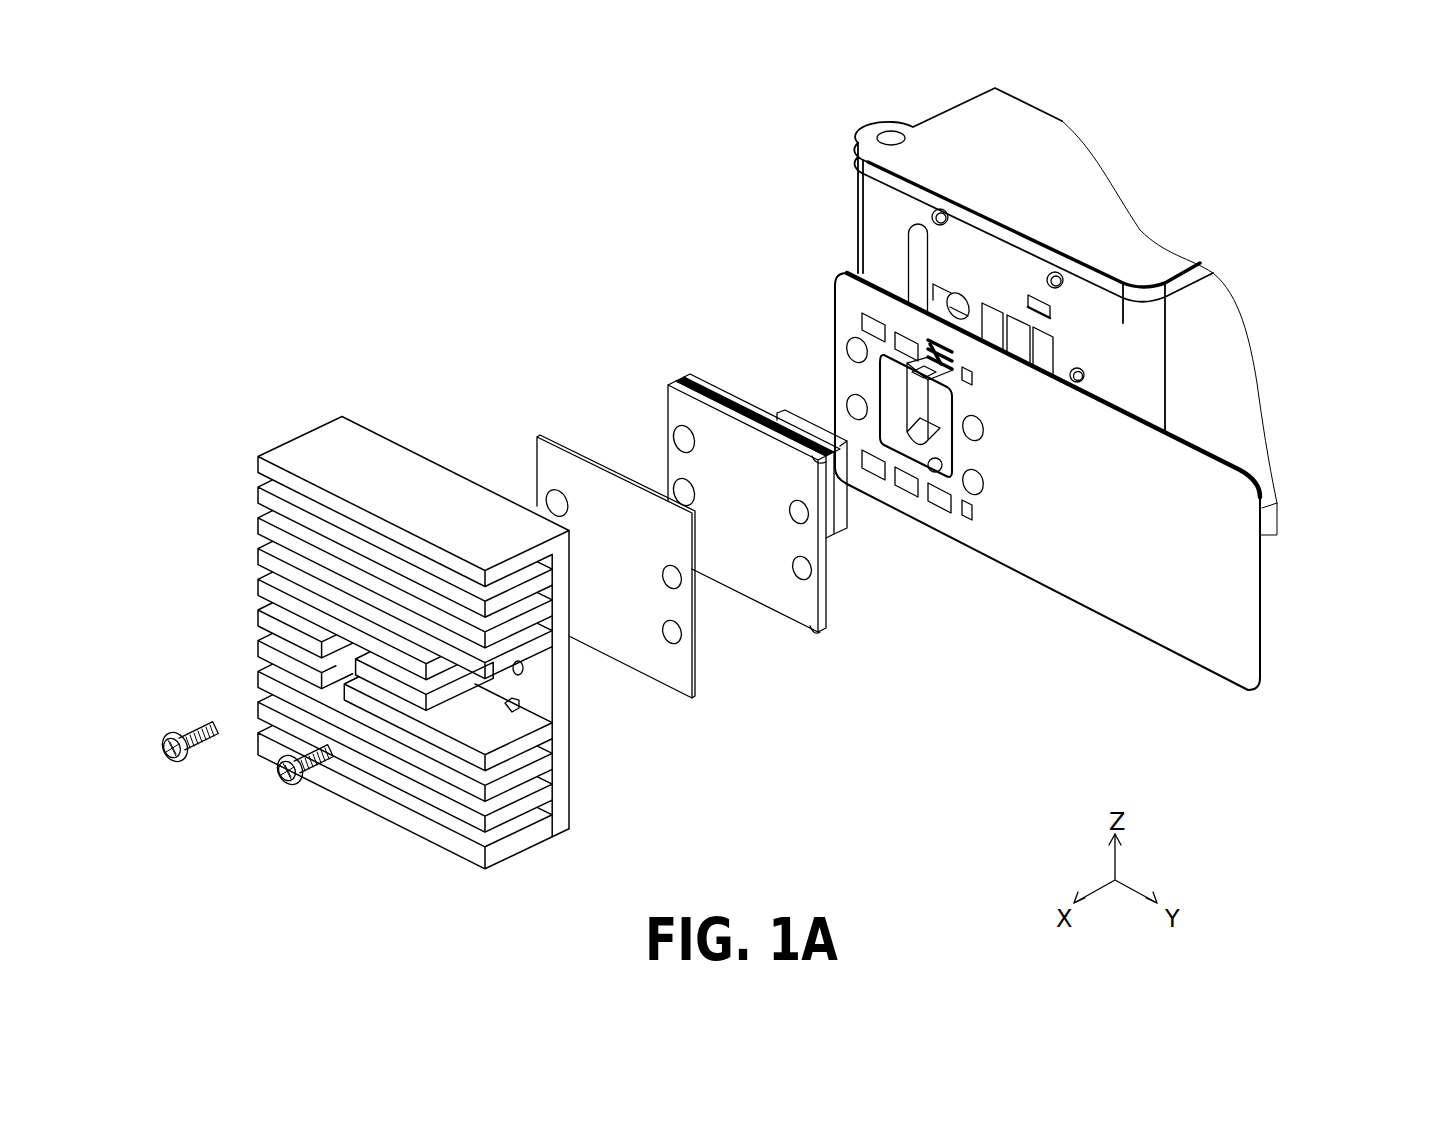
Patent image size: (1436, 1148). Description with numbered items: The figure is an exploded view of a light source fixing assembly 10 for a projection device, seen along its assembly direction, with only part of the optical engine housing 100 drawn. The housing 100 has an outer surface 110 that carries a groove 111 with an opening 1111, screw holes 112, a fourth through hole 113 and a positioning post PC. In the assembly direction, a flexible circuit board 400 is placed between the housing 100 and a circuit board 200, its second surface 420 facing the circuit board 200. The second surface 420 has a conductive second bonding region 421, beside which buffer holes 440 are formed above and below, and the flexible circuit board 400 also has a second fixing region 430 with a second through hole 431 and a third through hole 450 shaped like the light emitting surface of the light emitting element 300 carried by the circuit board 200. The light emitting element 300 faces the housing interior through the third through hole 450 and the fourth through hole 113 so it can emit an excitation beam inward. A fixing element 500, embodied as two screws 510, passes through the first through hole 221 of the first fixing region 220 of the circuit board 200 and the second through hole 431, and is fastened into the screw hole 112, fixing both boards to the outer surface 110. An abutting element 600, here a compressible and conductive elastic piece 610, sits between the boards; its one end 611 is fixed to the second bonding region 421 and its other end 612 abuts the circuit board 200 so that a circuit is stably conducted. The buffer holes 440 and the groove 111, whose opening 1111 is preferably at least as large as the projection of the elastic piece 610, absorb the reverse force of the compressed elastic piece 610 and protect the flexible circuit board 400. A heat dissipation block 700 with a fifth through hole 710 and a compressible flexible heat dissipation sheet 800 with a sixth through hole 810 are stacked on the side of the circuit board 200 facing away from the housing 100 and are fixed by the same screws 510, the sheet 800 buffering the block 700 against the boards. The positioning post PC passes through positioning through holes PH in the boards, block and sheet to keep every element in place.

The light source fixing assembly 10 is at (218, 253).
The optical engine housing 100 is at (975, 125).
The outer surface 110 is at (932, 251).
The groove 111 is at (1066, 226).
The opening of the groove 1111 is at (950, 337).
The screw hole 112 is at (1092, 372).
The fourth through hole 113 is at (1052, 347).
The positioning post PC is at (950, 297).
The circuit board 200 is at (700, 382).
The first fixing region 220 is at (863, 577).
The first through hole 221 is at (806, 520).
The light emitting element 300 is at (788, 410).
The flexible circuit board 400 is at (838, 278).
The second surface 420 is at (1024, 536).
The second bonding region 421 is at (858, 318).
The second fixing region 430 is at (967, 529).
The second through hole 431 is at (971, 438).
The buffer hole 440 is at (1039, 312).
The third through hole 450 is at (896, 446).
The fixing element 500 is at (277, 799).
The screw 510 is at (312, 785).
The abutting element 600 is at (1122, 481).
The elastic piece 610 is at (968, 368).
The one end of the elastic piece 611 is at (1090, 381).
The other end of the elastic piece 612 is at (916, 380).
The heat dissipation block 700 is at (318, 440).
The fifth through hole 710 is at (524, 671).
The flexible heat dissipation sheet 800 is at (556, 458).
The sixth through hole 810 is at (678, 580).
The positioning through hole PH is at (546, 502).